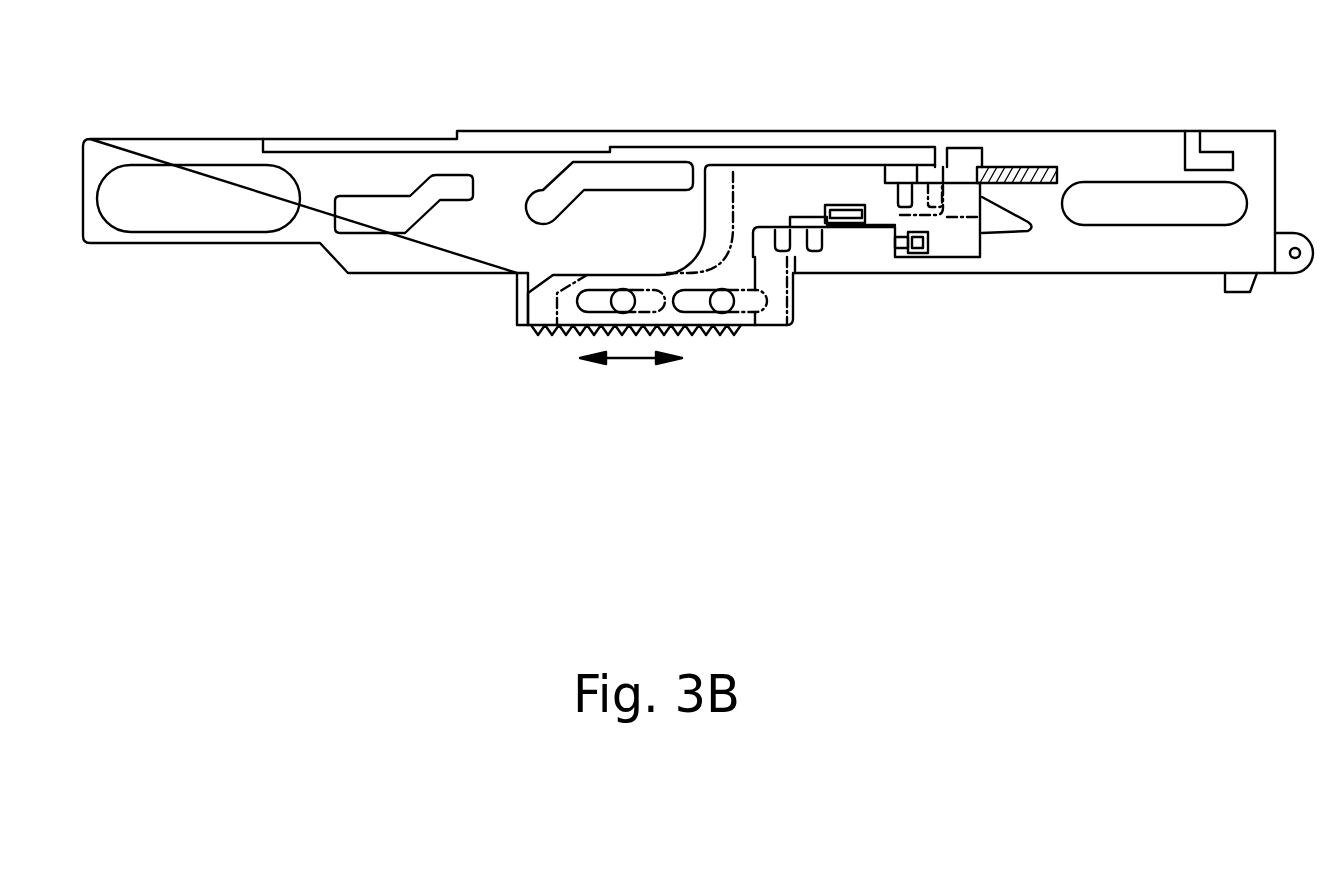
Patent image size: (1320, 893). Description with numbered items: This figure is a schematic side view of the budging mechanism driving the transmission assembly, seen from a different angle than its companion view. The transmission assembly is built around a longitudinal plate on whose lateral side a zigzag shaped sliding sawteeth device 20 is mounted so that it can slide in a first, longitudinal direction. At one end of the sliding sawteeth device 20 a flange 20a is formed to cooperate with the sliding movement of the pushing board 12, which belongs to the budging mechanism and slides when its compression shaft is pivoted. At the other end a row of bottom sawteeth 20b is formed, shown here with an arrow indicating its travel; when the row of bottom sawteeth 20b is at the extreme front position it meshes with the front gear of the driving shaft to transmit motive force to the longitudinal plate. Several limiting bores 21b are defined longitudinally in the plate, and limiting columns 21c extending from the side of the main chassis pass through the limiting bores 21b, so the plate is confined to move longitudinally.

The pushing board 12 is at (992, 160).
The sliding sawteeth device 20 is at (715, 167).
The flange 20a is at (967, 167).
The row of bottom sawteeth 20b is at (543, 327).
The limiting bores 21b is at (1105, 213).
The limiting columns 21c is at (1218, 150).